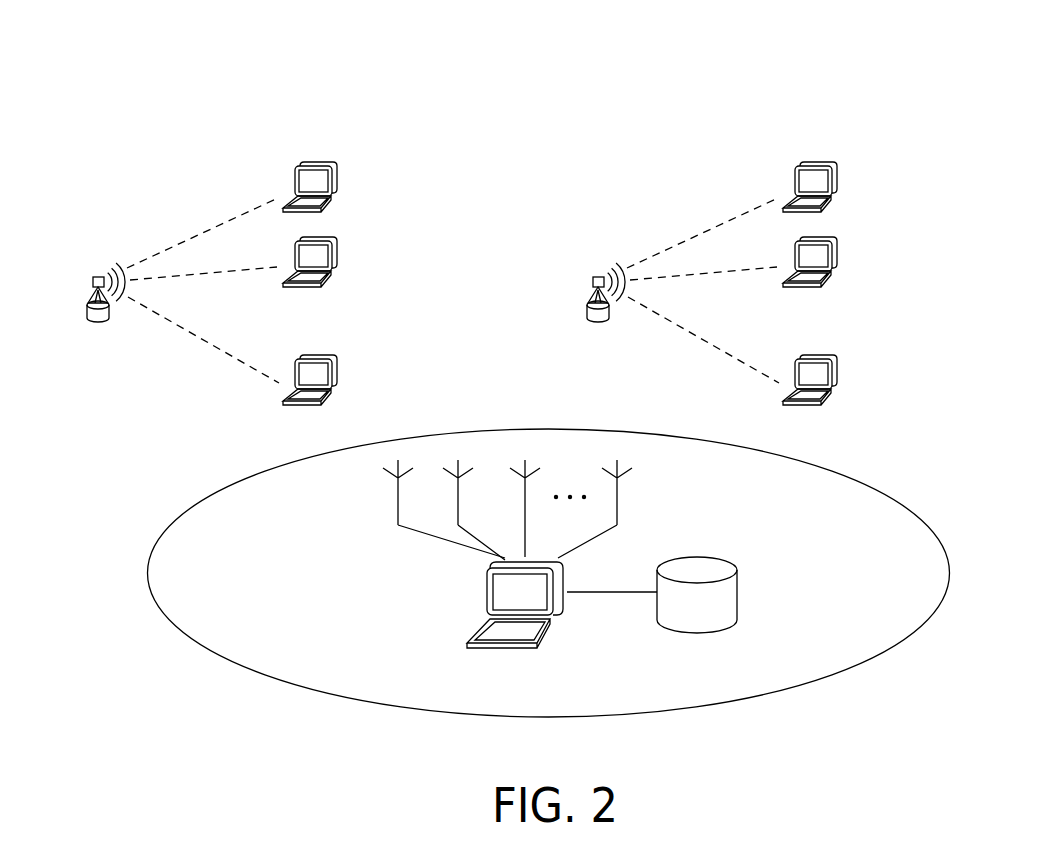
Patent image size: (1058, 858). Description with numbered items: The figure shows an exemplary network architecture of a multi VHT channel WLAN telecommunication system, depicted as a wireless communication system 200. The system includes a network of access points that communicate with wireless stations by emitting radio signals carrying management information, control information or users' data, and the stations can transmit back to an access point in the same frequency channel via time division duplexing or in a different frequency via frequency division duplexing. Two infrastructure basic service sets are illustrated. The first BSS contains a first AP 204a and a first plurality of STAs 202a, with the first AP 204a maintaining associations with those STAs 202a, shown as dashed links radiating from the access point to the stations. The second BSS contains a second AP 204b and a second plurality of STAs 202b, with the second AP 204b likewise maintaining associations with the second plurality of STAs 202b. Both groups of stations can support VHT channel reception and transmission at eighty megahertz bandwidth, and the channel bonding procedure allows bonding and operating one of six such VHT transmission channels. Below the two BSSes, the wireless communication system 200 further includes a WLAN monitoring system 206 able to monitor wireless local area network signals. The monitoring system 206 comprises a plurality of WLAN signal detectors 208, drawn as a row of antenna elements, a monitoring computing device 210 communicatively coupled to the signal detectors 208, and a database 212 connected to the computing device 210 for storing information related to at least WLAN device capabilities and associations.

The wireless communication system 200 is at (737, 97).
The first plurality of STAs 202a is at (339, 176).
The second plurality of STAs 202b is at (839, 176).
The first AP 204a is at (103, 265).
The second AP 204b is at (603, 265).
The WLAN monitoring system 206 is at (863, 483).
The WLAN signal detectors 208 is at (633, 497).
The monitoring computing device 210 is at (547, 637).
The database 212 is at (737, 593).